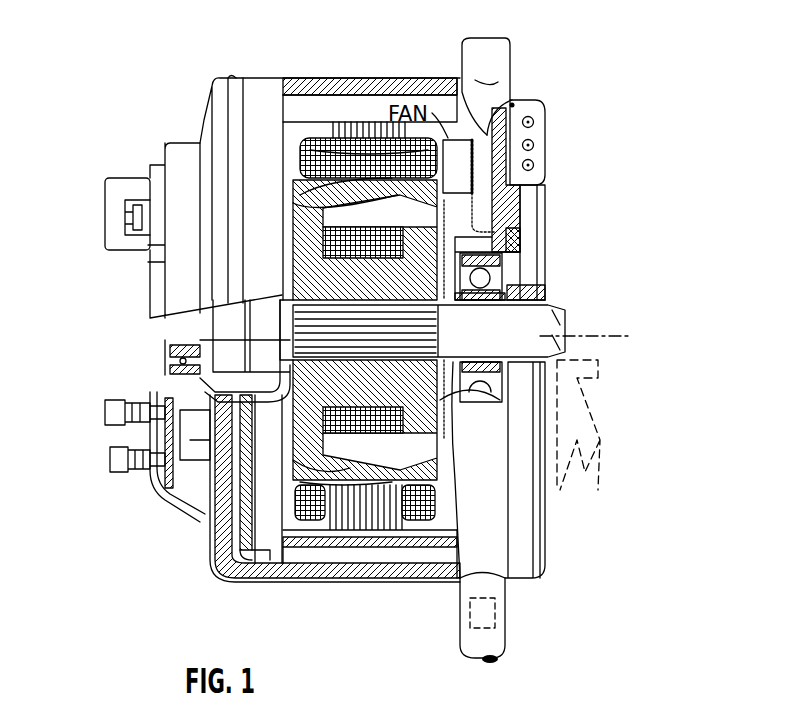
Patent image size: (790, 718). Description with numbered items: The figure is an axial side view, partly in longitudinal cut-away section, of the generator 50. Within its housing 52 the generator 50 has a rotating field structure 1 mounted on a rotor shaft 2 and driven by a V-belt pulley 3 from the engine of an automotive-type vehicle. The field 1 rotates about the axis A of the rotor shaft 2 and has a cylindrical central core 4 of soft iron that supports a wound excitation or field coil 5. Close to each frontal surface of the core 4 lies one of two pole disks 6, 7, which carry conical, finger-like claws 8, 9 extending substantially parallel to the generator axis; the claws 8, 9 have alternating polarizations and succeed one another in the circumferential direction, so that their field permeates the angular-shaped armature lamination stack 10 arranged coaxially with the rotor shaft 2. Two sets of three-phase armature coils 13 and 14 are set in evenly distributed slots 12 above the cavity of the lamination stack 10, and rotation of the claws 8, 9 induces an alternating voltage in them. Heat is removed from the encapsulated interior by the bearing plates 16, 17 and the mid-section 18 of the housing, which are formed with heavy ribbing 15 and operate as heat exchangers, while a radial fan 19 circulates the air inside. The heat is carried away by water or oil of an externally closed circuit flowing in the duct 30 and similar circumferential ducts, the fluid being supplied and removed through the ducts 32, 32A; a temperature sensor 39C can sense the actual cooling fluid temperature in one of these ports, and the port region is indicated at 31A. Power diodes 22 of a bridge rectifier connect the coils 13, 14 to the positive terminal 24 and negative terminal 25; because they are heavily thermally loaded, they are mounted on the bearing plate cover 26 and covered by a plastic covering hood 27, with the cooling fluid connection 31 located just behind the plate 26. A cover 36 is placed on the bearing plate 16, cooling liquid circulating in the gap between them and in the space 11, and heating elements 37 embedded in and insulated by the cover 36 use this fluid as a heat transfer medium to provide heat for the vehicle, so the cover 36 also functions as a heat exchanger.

The rotating field structure 1 is at (507, 270).
The rotor shaft 2 is at (543, 323).
The V-belt pulley 3 is at (600, 445).
The central core 4 is at (543, 298).
The field coil 5 is at (440, 438).
The pole disk 6 is at (302, 240).
The pole disk 7 is at (500, 404).
The claws 8 is at (315, 522).
The claws 9 is at (352, 462).
The armature lamination stack 10 is at (362, 132).
The space 11 is at (525, 181).
The slots 12 is at (343, 142).
The armature coils 13 is at (300, 147).
The armature coils 14 is at (303, 168).
The ribbing 15 is at (462, 503).
The bearing plate 16 is at (497, 210).
The bearing plate 17 is at (212, 554).
The mid-section 18 is at (397, 553).
The radial fan 19 is at (538, 182).
The power diodes 22 is at (152, 498).
The positive terminal 24 is at (110, 412).
The negative terminal 25 is at (118, 470).
The bearing plate cover 26 is at (247, 505).
The covering hood 27 is at (180, 497).
The duct 30 is at (393, 580).
The cooling fluid connection 31 is at (214, 575).
The inlet port 31A is at (513, 100).
The duct 32 is at (490, 40).
The duct 32A is at (500, 663).
The cover 36 is at (517, 233).
The heating elements 37 is at (536, 165).
The temperature sensor 39C is at (495, 613).
The generator 50 is at (405, 80).
The housing 52 is at (500, 556).
The axis A is at (596, 340).